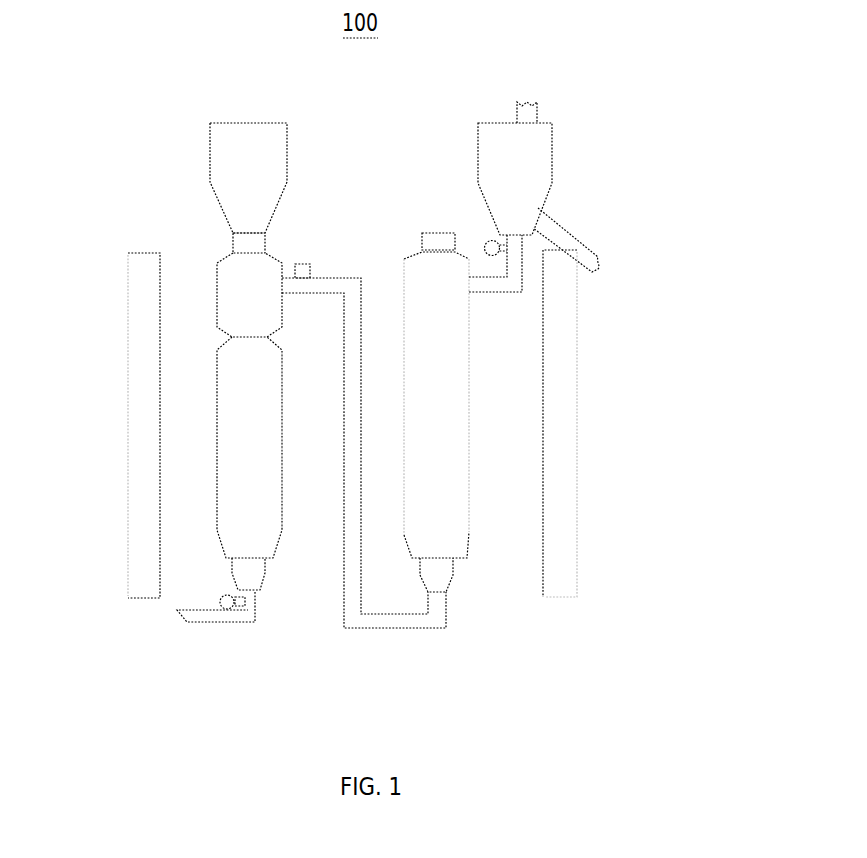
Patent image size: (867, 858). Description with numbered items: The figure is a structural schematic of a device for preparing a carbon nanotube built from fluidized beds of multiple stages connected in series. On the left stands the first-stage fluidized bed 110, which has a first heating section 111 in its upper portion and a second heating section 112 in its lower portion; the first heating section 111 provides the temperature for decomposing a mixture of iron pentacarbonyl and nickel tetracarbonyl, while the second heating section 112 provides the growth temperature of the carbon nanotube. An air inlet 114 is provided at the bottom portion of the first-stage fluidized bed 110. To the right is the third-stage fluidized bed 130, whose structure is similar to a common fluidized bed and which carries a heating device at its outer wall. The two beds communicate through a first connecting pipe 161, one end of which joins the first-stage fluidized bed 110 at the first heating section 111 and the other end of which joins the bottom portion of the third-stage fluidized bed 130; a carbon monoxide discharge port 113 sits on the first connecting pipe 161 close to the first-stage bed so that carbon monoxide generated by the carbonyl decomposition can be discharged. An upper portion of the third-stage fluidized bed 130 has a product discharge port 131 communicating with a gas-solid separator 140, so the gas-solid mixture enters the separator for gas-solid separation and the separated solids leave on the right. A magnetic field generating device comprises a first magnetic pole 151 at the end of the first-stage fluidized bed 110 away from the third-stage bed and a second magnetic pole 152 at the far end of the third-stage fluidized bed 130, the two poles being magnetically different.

The first-stage fluidized bed 110 is at (201, 374).
The first heating section 111 is at (227, 272).
The second heating section 112 is at (237, 443).
The carbon monoxide discharge port 113 is at (302, 264).
The air inlet 114 is at (253, 598).
The third-stage fluidized bed 130 is at (505, 435).
The product discharge port 131 is at (557, 218).
The gas-solid separator 140 is at (518, 145).
The first magnetic pole 151 is at (145, 272).
The second magnetic pole 152 is at (560, 383).
The first connecting pipe 161 is at (343, 282).